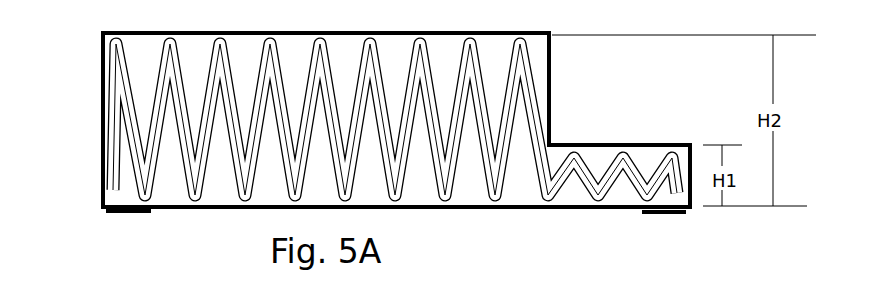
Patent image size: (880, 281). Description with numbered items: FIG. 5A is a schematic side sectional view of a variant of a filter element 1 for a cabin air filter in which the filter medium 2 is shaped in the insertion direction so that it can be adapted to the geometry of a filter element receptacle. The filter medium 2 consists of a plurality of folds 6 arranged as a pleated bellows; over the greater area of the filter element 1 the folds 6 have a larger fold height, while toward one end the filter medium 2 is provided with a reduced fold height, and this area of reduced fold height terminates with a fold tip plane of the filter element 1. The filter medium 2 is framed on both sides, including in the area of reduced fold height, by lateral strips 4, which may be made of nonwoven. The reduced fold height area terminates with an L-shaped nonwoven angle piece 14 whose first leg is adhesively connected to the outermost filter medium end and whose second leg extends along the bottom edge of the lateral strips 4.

The filter element 1 is at (70, 151).
The filter medium 2 is at (412, 176).
The lateral strips 4 is at (172, 188).
The folds 6 is at (108, 30).
The L-shaped nonwoven angle piece 14 is at (100, 187).